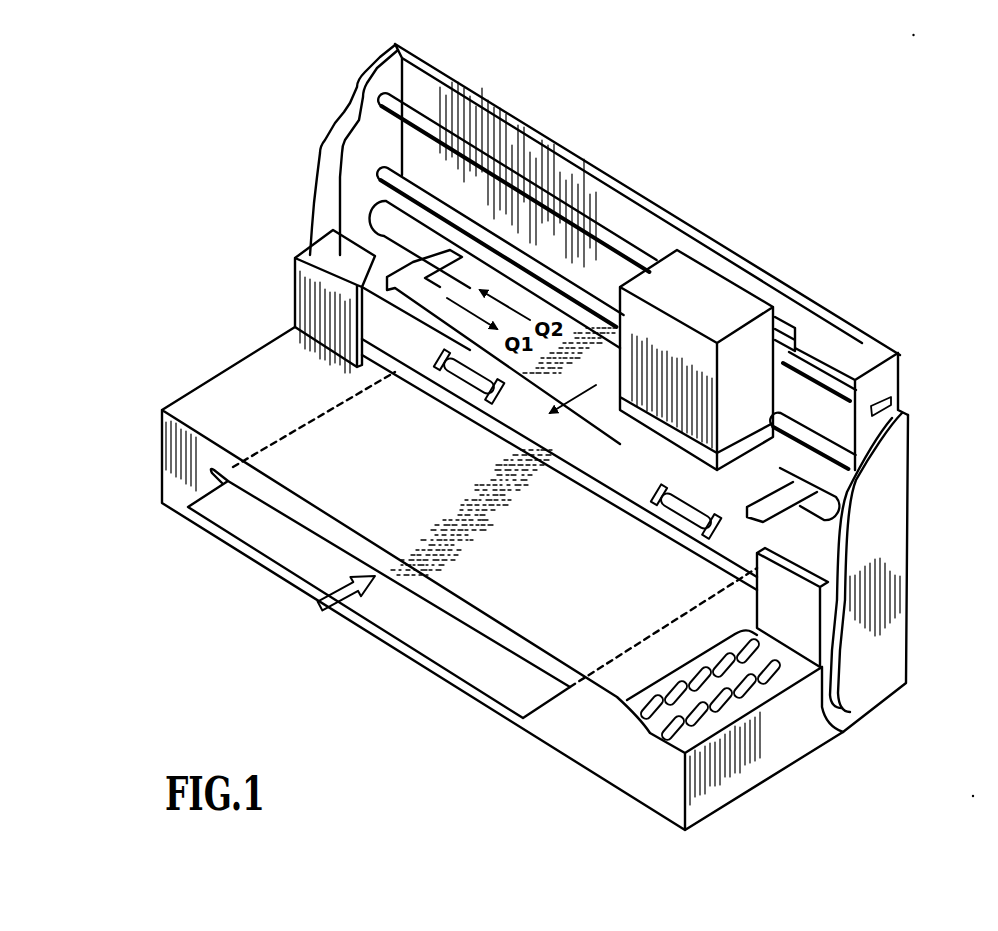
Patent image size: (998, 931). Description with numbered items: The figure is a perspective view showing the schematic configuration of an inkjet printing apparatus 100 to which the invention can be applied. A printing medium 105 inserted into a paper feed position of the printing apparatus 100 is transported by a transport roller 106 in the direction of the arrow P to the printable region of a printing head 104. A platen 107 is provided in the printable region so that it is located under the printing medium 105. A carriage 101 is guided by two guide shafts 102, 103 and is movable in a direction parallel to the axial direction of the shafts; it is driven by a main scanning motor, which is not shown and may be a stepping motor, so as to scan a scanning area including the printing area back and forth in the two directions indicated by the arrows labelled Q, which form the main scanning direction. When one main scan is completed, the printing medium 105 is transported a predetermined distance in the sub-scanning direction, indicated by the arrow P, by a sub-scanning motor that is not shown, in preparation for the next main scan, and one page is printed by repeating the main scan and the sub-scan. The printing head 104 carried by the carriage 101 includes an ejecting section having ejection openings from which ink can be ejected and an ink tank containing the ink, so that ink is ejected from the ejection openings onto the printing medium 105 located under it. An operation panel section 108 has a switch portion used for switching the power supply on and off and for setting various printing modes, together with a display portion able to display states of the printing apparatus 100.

The printing apparatus 100 is at (494, 740).
The carriage 101 is at (784, 378).
The guide shaft 102 is at (413, 140).
The guide shaft 103 is at (477, 163).
The printing head 104 is at (700, 290).
The printing medium 105 is at (433, 650).
The transport roller 106 is at (825, 490).
The platen 107 is at (360, 243).
The operation panel section 108 is at (740, 713).